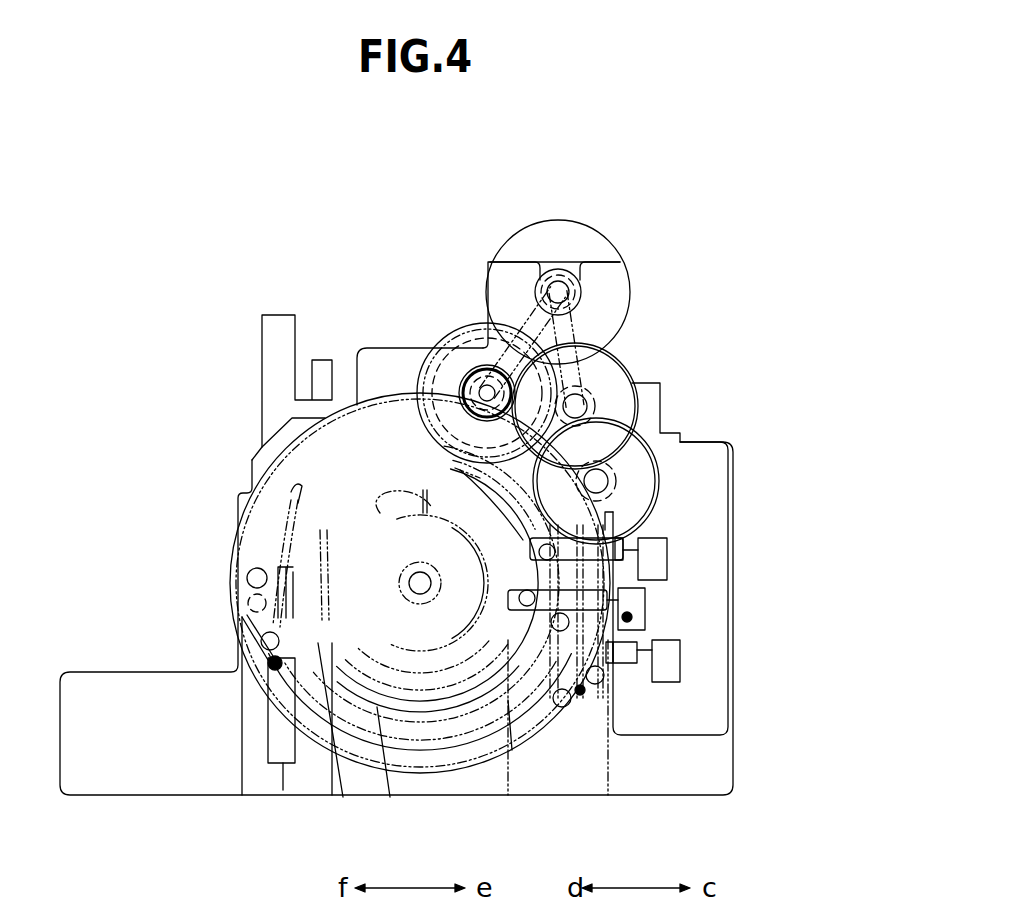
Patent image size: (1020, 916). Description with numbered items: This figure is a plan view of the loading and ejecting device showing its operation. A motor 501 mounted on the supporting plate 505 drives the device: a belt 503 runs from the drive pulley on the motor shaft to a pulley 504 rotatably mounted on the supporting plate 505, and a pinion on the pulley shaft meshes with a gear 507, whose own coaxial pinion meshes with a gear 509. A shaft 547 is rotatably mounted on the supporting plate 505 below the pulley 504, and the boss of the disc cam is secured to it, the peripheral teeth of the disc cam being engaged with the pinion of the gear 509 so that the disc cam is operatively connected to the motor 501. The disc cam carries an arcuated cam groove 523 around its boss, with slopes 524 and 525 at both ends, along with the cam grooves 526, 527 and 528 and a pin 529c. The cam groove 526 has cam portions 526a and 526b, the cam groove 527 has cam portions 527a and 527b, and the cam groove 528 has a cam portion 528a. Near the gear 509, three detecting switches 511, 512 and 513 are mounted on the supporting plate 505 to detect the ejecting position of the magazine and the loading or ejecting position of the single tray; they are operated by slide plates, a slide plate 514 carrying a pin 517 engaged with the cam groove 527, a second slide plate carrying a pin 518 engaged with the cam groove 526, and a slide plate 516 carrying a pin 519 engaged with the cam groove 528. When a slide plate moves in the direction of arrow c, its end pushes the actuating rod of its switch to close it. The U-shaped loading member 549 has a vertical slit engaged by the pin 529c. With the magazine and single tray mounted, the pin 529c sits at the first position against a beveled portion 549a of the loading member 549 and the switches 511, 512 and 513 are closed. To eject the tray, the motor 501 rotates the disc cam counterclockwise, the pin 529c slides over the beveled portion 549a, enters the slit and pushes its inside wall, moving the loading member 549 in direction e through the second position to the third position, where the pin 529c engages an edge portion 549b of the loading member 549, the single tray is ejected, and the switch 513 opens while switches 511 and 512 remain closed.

The motor 501 is at (583, 238).
The belt 503 is at (480, 330).
The pulley 504 is at (462, 360).
The supporting plate 505 is at (720, 790).
The gear 507 is at (620, 387).
The gear 509 is at (642, 472).
The detecting switch 511 is at (668, 557).
The detecting switch 512 is at (645, 618).
The detecting switch 513 is at (665, 665).
The slide plate 514 is at (640, 527).
The slide plate 516 is at (623, 665).
The pin 517 is at (523, 555).
The pin 518 is at (507, 600).
The pin 519 is at (558, 717).
The arcuated cam groove 523 is at (473, 543).
The slope 524 is at (415, 500).
The slope 525 is at (433, 660).
The cam groove 526 is at (324, 600).
The cam portion 526a is at (343, 797).
The cam portion 526b is at (512, 750).
The cam groove 527 is at (240, 557).
The cam portion 527a is at (390, 797).
The cam portion 527b is at (461, 496).
The cam groove 528 is at (293, 502).
The cam portion 528a is at (283, 763).
The pin 529c is at (267, 658).
The shaft 547 is at (439, 583).
The loading member 549 is at (245, 695).
The beveled portion 549a is at (250, 622).
The edge portion 549b is at (292, 690).